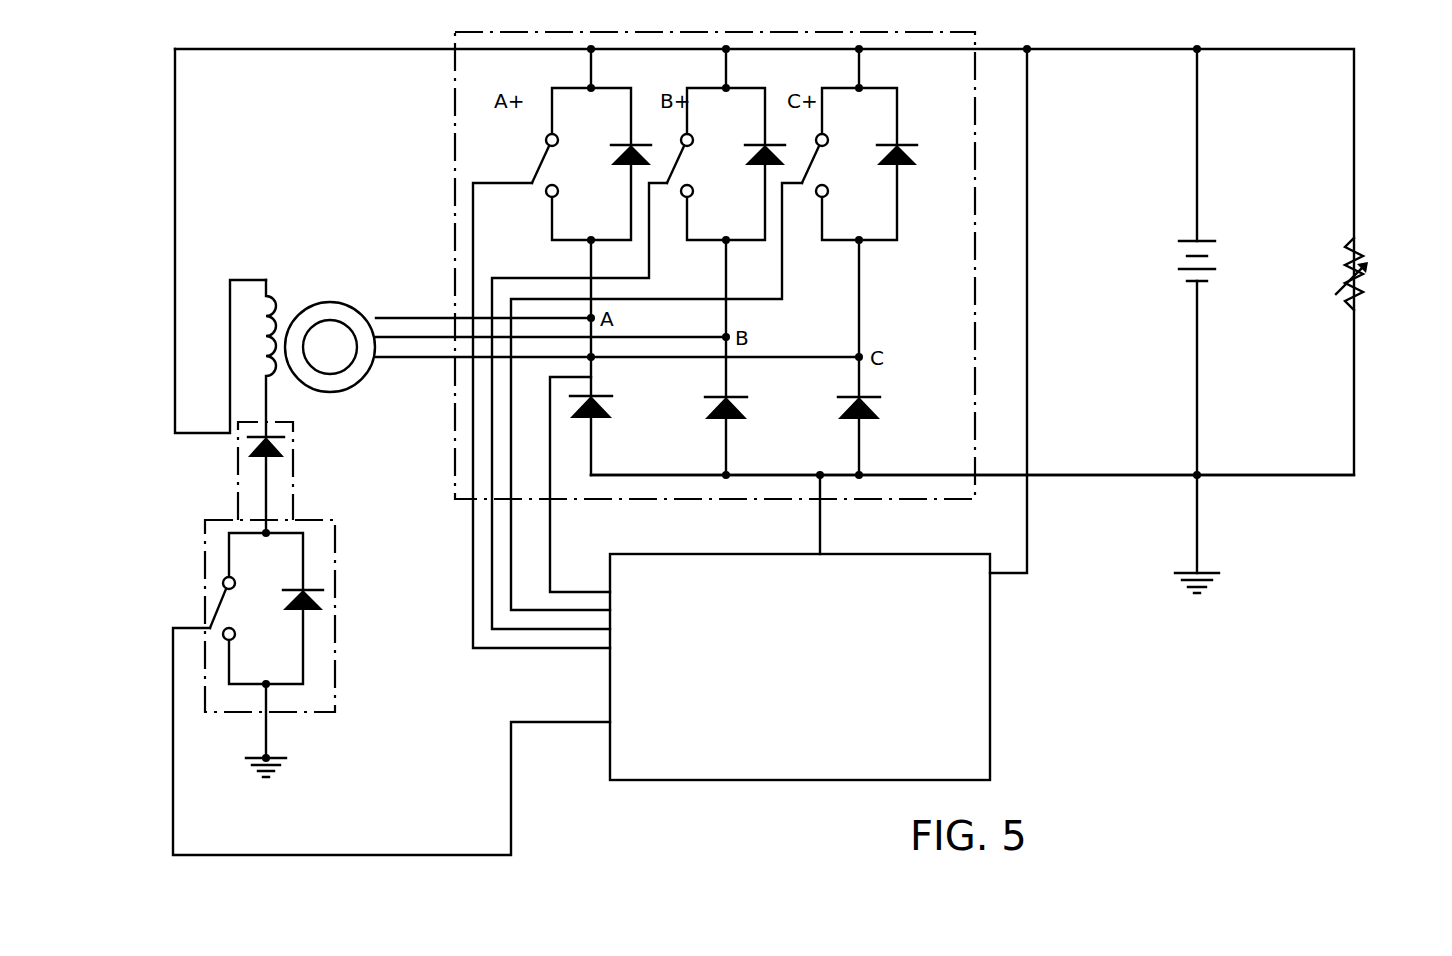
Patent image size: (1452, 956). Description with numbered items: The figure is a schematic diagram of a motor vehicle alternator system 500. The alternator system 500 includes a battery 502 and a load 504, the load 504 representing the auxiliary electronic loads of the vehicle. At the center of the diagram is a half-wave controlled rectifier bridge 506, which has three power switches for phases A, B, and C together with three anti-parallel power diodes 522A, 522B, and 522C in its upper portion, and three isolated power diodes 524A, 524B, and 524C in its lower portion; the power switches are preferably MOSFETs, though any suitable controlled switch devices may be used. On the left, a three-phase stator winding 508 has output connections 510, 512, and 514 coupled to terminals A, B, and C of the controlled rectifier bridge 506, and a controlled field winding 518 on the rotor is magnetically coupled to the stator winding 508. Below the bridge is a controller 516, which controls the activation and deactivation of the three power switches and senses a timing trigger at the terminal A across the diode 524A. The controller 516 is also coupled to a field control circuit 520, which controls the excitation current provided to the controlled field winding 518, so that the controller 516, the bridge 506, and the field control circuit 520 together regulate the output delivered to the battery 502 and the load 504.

The motor vehicle alternator system 500 is at (1026, 726).
The battery 502 is at (1203, 245).
The load 504 is at (1348, 267).
The half-wave controlled rectifier bridge 506 is at (455, 78).
The three-phase stator winding 508 is at (311, 392).
The output connection 510 is at (390, 317).
The output connection 512 is at (405, 336).
The output connection 514 is at (395, 358).
The controller 516 is at (992, 661).
The controlled field winding 518 is at (268, 263).
The field control circuit 520 is at (335, 578).
The anti-parallel power diode 522A is at (591, 164).
The anti-parallel power diode 522B is at (726, 164).
The anti-parallel power diode 522C is at (859, 164).
The isolated power diode 524A is at (610, 423).
The isolated power diode 524B is at (743, 423).
The isolated power diode 524C is at (877, 423).